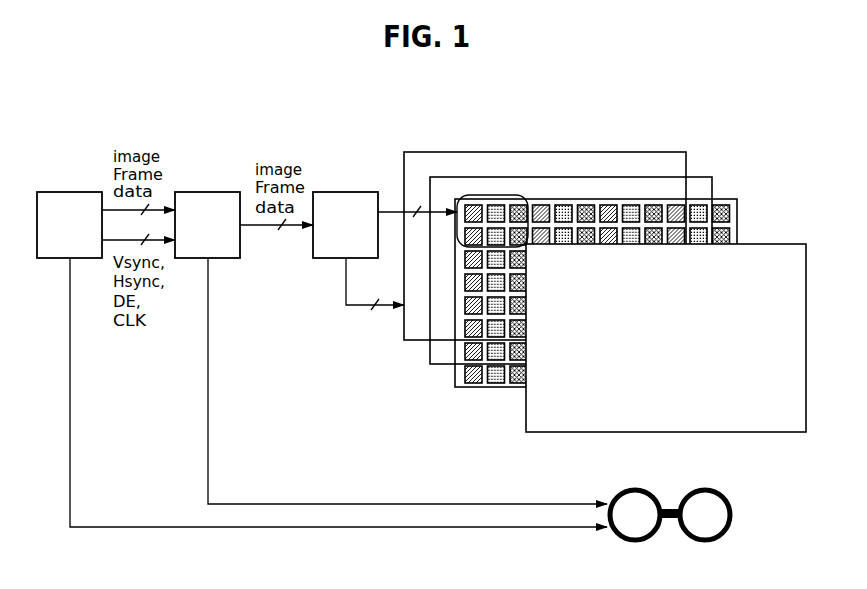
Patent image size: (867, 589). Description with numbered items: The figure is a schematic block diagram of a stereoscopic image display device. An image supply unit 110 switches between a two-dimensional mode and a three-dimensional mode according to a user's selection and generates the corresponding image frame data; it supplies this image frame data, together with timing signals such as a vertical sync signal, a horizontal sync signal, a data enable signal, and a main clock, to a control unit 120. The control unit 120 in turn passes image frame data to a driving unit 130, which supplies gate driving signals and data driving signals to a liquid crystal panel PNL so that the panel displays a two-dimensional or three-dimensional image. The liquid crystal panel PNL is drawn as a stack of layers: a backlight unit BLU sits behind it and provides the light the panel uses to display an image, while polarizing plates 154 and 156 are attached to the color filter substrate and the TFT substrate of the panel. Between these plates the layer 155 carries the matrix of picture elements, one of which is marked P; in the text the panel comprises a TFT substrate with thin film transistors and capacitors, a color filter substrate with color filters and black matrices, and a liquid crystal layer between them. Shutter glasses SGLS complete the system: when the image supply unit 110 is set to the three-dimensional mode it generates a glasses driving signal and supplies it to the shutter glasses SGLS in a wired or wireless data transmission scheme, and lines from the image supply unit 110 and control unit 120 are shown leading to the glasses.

The image supply unit 110 is at (81, 235).
The control unit 120 is at (219, 235).
The driving unit 130 is at (357, 235).
The backlight unit BLU is at (680, 150).
The liquid crystal panel PNL is at (627, 271).
The polarizing plate 154 is at (699, 176).
The pixel array 155 is at (730, 198).
The polarizing plate 156 is at (674, 314).
The pixel P is at (492, 195).
The shutter glasses SGLS is at (727, 493).